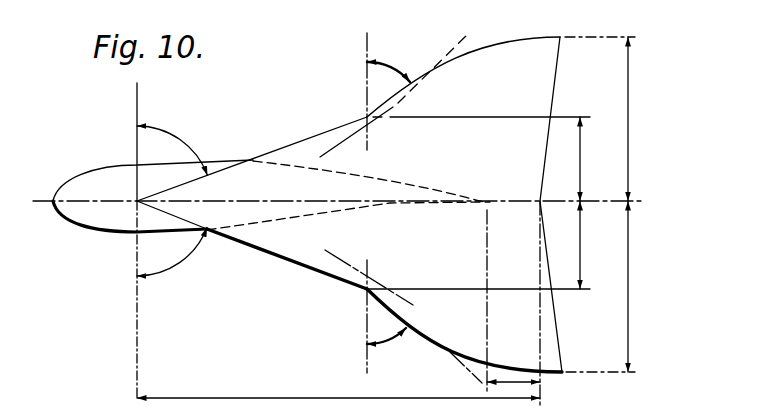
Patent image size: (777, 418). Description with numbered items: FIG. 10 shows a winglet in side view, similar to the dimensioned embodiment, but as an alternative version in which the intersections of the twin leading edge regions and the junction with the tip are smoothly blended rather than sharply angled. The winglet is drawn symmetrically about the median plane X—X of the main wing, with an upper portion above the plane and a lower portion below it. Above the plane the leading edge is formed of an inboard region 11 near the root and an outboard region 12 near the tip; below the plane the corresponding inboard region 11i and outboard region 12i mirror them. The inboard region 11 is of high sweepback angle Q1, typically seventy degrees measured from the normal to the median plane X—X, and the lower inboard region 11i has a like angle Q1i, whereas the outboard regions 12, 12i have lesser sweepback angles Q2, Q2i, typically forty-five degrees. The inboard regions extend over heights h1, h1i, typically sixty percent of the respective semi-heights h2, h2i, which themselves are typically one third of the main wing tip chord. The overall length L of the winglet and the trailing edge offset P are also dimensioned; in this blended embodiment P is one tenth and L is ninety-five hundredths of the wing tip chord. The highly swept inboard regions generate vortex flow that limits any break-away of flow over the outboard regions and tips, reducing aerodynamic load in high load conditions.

The inboard region 11 is at (256, 158).
The outboard region 12 is at (412, 77).
The inboard region 11i is at (300, 267).
The outboard region 12i is at (434, 344).
The sweepback angle of inboard region Q1 is at (172, 142).
The sweepback angle of lower inboard region Q1i is at (172, 265).
The sweepback angle of outboard region Q2 is at (395, 74).
The sweepback angle of lower outboard region Q2i is at (398, 331).
The height of inboard region h1 is at (567, 159).
The height of lower inboard region h1i is at (566, 245).
The semi-height h2 is at (644, 119).
The lower semi-height h2i is at (645, 286).
The winglet length L is at (338, 388).
The trailing edge offset P is at (512, 386).
The median plane X is at (337, 189).